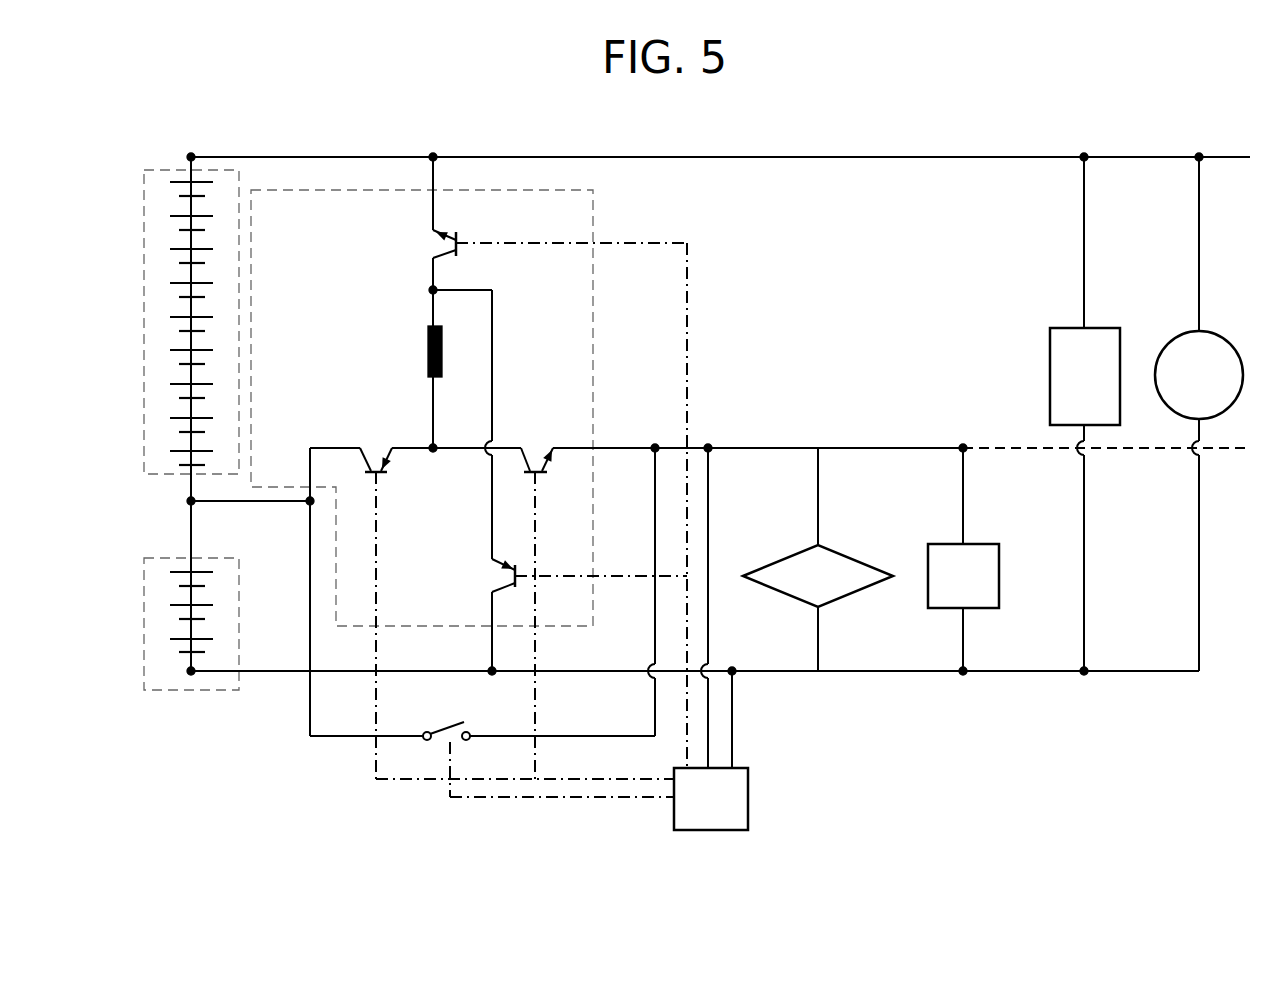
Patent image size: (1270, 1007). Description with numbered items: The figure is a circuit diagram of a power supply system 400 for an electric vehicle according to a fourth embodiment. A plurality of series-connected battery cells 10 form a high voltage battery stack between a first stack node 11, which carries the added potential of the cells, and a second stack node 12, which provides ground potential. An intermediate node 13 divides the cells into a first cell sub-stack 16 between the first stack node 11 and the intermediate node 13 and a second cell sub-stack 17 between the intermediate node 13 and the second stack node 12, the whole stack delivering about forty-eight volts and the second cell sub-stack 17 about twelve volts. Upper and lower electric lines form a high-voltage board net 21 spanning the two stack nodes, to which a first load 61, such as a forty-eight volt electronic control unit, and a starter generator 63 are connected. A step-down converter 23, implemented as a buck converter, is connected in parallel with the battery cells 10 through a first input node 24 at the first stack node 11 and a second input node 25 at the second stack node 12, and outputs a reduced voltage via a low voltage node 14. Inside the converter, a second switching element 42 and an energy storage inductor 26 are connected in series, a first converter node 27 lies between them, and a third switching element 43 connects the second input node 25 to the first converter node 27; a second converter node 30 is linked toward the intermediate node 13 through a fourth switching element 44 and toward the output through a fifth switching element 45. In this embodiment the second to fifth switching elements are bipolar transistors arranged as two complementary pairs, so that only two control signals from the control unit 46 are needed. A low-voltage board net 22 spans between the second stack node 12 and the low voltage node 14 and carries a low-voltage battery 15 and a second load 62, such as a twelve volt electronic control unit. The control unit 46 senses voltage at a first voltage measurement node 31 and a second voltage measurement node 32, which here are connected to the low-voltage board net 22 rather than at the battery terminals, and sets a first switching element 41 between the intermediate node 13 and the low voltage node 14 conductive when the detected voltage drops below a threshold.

The power supply system 400 is at (155, 126).
The battery cell 10 is at (191, 297).
The first stack node 11 is at (191, 152).
The second stack node 12 is at (191, 674).
The intermediate node 13 is at (191, 501).
The low voltage node 14 is at (655, 445).
The low-voltage battery 15 is at (818, 559).
The first cell sub-stack 16 is at (144, 226).
The second cell sub-stack 17 is at (144, 641).
The high-voltage board net 21 is at (888, 154).
The low-voltage board net 22 is at (904, 445).
The step-down converter 23 is at (598, 215).
The first input node 24 is at (433, 152).
The second input node 25 is at (490, 669).
The energy storage inductor 26 is at (428, 352).
The first converter node 27 is at (433, 290).
The second converter node 30 is at (433, 452).
The first voltage measurement node 31 is at (710, 445).
The second voltage measurement node 32 is at (734, 667).
The first switching element 41 is at (445, 727).
The second switching element 42 is at (458, 237).
The third switching element 43 is at (510, 576).
The fourth switching element 44 is at (372, 478).
The fifth switching element 45 is at (545, 478).
The control unit 46 is at (711, 799).
The first load 61 is at (1085, 414).
The second load 62 is at (963, 559).
The starter generator 63 is at (1199, 412).